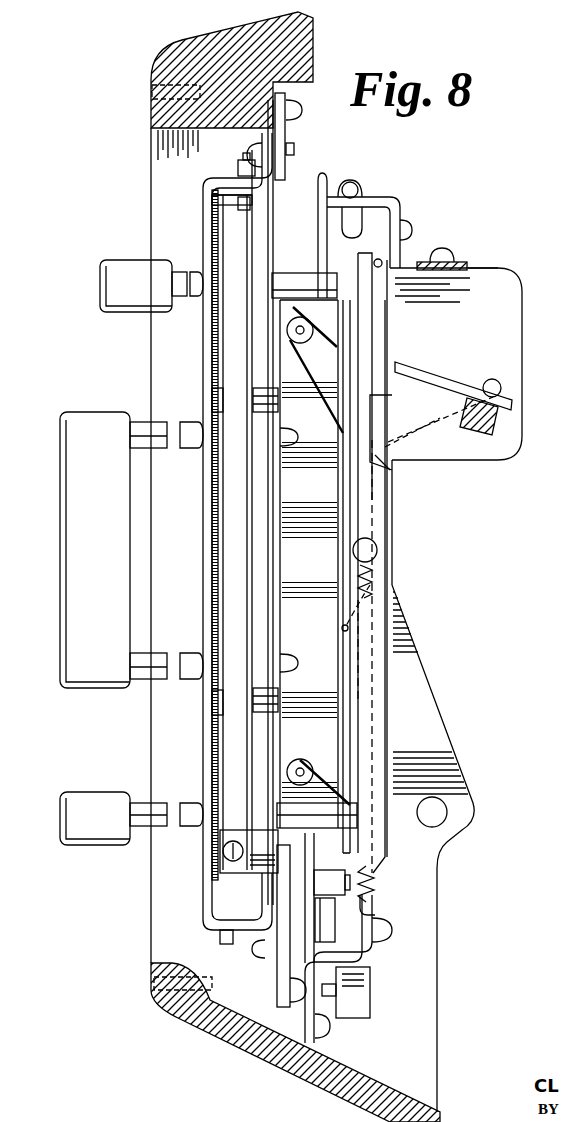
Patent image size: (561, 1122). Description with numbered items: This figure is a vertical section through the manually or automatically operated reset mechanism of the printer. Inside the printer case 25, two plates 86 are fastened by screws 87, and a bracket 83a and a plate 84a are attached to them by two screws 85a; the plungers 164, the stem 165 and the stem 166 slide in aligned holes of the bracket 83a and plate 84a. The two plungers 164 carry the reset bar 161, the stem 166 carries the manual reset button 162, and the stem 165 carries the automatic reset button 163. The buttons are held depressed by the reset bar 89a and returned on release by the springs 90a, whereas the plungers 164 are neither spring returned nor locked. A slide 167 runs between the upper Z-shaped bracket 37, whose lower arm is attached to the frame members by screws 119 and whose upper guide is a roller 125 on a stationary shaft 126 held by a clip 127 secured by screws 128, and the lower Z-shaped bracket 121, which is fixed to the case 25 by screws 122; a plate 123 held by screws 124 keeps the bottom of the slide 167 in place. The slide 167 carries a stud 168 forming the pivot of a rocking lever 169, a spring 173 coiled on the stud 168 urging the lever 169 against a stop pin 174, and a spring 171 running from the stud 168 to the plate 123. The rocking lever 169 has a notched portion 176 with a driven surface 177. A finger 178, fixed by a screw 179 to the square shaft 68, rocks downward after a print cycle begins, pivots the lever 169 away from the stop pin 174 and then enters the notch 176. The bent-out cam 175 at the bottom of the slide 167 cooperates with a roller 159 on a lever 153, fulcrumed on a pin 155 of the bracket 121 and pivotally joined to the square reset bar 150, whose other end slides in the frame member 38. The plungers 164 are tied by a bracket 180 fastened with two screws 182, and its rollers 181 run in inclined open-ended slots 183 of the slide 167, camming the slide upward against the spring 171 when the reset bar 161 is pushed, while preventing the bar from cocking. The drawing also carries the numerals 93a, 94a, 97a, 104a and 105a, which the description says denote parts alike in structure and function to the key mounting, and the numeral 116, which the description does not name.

The printer case 25 is at (202, 42).
The slot 116 is at (148, 85).
The screws 87 is at (295, 108).
The plates 86 is at (288, 140).
The screws 85a is at (247, 156).
The screw 93a is at (238, 168).
The bracket 83a is at (203, 222).
The lower bracket 97a is at (222, 930).
The reset bar 89a is at (212, 344).
The springs 90a is at (266, 300).
The plate 84a is at (274, 206).
The tab 94a is at (244, 205).
The stem 165 is at (306, 275).
The roller 125 is at (346, 182).
The stationary shaft 126 is at (342, 189).
The clip 127 is at (396, 202).
The screws 128 is at (405, 225).
The screws 119 is at (431, 260).
The upper Z-shaped bracket 37 is at (470, 268).
The frame member 38 is at (517, 282).
The stop pin 174 is at (378, 259).
The slide 167 is at (387, 294).
The rocking lever 169 is at (376, 488).
The spring 173 is at (385, 517).
The stud 168 is at (378, 549).
The bracket 180 is at (300, 602).
The rollers 181 is at (306, 321).
The slots 183 is at (330, 346).
The stop 105a is at (212, 394).
The clamp block 104a is at (254, 393).
The screws 182 is at (292, 433).
The driven surface 177 is at (378, 405).
The finger 178 is at (447, 410).
The screw 179 is at (498, 374).
The square shaft 68 is at (478, 436).
The notched portion 176 is at (388, 464).
The automatic reset button 163 is at (100, 290).
The reset bar 161 is at (60, 424).
The manual reset button 162 is at (60, 820).
The plungers 164 is at (148, 422).
The stem 166 is at (140, 802).
The lever 153 is at (304, 836).
The square bar 150 is at (315, 839).
The roller 159 is at (318, 873).
The cam 175 is at (328, 913).
The spring 171 is at (375, 884).
The screws 124 is at (387, 920).
The plate 123 is at (374, 938).
The lower Z-shaped bracket 121 is at (358, 958).
The pin 155 is at (334, 990).
The screws 122 is at (332, 1033).